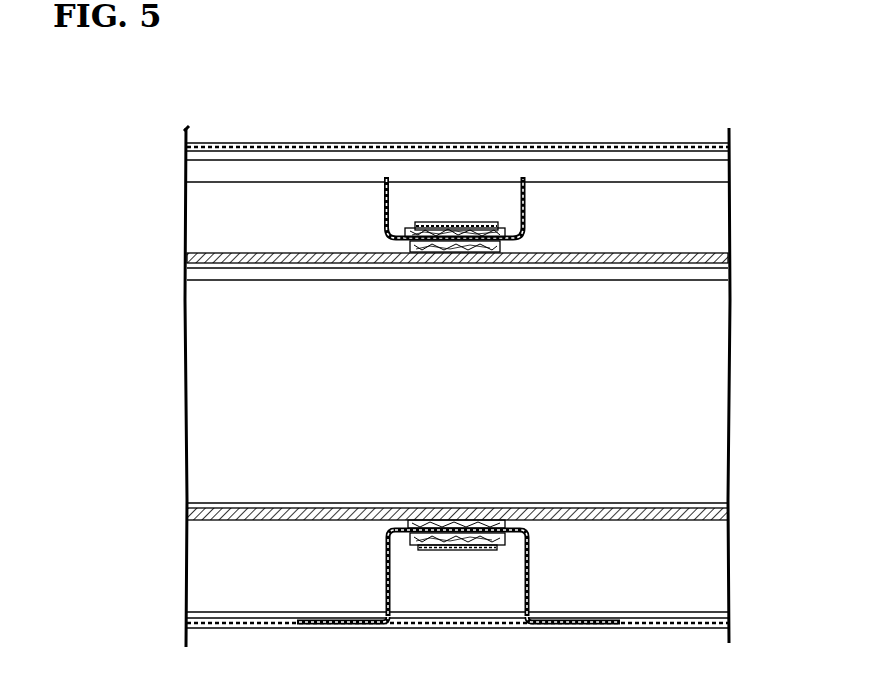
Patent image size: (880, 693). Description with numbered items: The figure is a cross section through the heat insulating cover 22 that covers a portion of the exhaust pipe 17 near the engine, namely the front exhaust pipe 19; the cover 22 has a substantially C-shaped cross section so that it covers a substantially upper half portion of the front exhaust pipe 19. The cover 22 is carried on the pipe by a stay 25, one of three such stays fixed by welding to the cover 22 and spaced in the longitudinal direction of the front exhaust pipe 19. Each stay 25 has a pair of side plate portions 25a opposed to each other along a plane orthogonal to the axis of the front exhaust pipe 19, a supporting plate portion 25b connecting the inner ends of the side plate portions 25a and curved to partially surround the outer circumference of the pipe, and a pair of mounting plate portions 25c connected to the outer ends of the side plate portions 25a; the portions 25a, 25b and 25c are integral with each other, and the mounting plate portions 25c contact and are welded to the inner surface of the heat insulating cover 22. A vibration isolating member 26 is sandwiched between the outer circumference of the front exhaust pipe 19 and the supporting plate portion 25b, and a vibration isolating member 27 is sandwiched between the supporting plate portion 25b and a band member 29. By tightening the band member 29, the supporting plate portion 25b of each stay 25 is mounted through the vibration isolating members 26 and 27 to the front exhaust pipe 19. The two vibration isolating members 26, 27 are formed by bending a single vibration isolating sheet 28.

The exhaust pipe 17 is at (612, 243).
The front exhaust pipe 19 is at (668, 252).
The heat insulating cover 22 is at (572, 142).
The stay 25 is at (380, 205).
The side plate portion 25a is at (383, 565).
The supporting plate portion 25b is at (455, 520).
The mounting plate portion 25c is at (317, 618).
The vibration isolating member 26 is at (441, 242).
The vibration isolating member 27 is at (490, 252).
The vibration isolating sheet 28 is at (455, 321).
The band member 29 is at (443, 222).